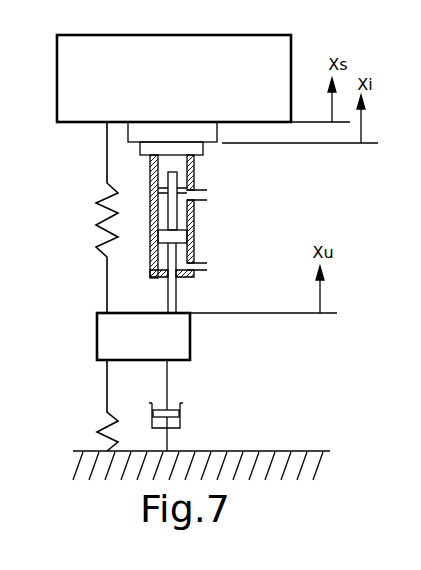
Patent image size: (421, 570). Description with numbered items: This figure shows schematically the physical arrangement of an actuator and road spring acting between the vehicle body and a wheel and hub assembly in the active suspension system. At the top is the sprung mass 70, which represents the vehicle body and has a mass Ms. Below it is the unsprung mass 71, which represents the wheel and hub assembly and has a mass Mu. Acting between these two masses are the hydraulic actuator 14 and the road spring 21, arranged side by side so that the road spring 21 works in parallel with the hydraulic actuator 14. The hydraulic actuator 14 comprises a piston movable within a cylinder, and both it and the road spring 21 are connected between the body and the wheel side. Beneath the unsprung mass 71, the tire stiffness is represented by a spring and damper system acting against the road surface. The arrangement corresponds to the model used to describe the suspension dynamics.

The sprung mass 70 is at (249, 57).
The hydraulic actuator 14 is at (203, 221).
The road spring 21 is at (97, 221).
The unsprung mass 71 is at (98, 325).